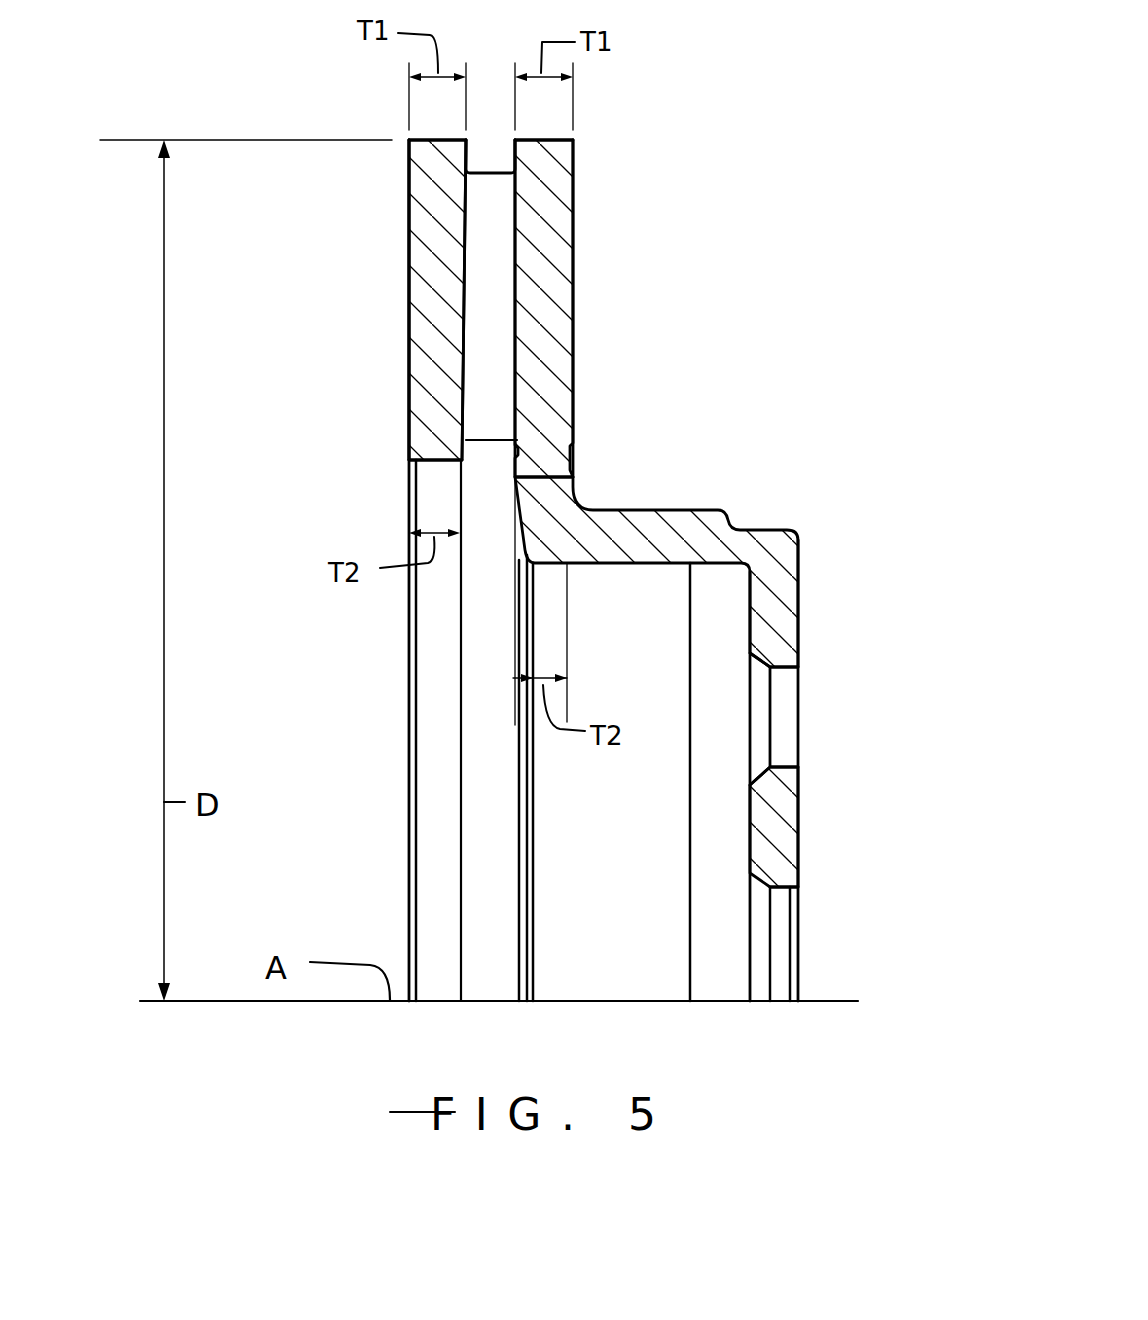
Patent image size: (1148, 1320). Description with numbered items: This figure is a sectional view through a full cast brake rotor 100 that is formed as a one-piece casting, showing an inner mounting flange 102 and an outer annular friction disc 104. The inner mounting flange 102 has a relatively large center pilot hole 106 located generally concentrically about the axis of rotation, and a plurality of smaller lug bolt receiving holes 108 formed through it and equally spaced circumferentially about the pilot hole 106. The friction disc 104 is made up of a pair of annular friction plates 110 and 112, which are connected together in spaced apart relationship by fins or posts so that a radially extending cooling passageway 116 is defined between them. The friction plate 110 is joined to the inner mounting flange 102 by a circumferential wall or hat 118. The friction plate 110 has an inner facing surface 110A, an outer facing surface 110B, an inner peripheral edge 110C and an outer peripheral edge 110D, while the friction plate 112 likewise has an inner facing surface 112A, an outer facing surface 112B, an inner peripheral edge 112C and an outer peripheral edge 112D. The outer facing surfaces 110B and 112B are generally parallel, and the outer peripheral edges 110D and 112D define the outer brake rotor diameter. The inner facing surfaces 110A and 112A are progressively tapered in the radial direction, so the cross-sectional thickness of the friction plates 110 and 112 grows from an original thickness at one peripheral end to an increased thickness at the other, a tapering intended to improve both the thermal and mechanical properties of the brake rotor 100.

The brake rotor 100 is at (790, 256).
The inner mounting flange 102 is at (798, 835).
The outer annular friction disc 104 is at (409, 390).
The center pilot hole 106 is at (780, 887).
The lug bolt receiving holes 108 is at (783, 667).
The friction plate 110 is at (565, 232).
The inner facing surface 110A is at (510, 290).
The outer facing surface 110B is at (573, 315).
The inner peripheral edge 110C is at (548, 140).
The outer peripheral edge 110D is at (541, 563).
The friction plate 112 is at (409, 237).
The inner facing surface 112A is at (462, 313).
The outer facing surface 112B is at (409, 345).
The inner peripheral edge 112C is at (440, 137).
The outer peripheral edge 112D is at (437, 462).
The cooling passageway 116 is at (495, 380).
The circumferential wall or hat 118 is at (700, 528).